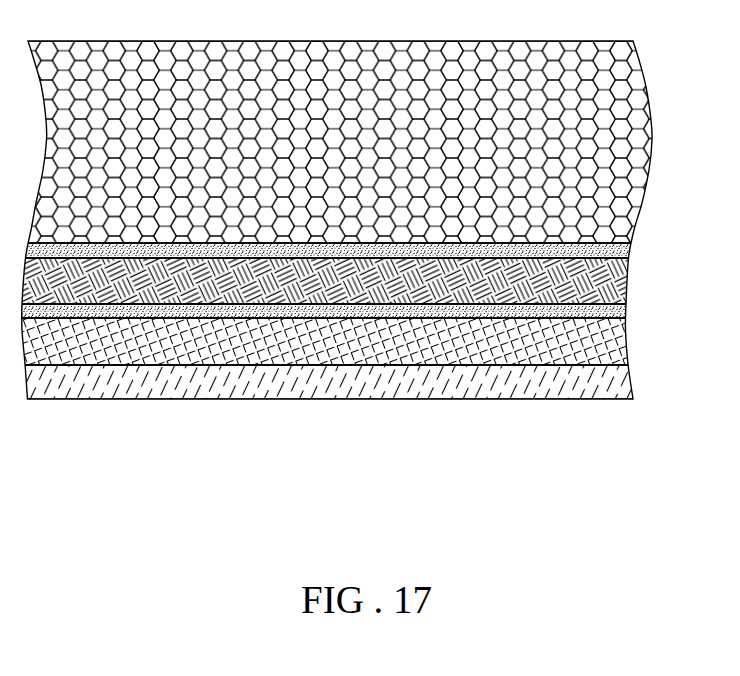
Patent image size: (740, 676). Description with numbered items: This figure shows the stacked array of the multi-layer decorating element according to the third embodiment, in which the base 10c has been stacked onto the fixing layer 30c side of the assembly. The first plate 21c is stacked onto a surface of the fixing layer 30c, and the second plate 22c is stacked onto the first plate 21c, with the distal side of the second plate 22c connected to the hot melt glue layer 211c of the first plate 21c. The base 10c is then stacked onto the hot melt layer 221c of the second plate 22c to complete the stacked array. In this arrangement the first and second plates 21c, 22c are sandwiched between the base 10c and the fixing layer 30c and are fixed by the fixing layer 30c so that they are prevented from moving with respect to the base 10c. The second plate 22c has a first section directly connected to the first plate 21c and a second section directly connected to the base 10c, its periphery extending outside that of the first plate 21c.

The base 10c is at (621, 147).
The hot melt layer 221c is at (634, 251).
The second plate 22c is at (612, 281).
The hot melt glue layer 211c is at (622, 312).
The first plate 21c is at (622, 343).
The fixing layer 30c is at (608, 380).